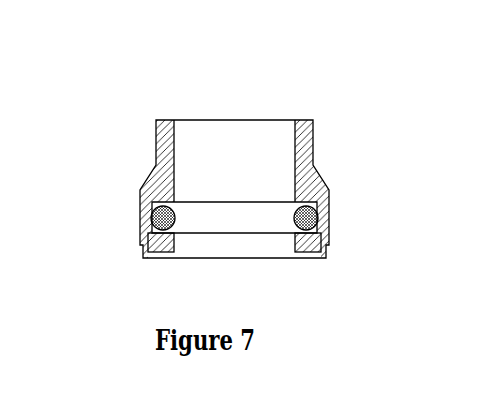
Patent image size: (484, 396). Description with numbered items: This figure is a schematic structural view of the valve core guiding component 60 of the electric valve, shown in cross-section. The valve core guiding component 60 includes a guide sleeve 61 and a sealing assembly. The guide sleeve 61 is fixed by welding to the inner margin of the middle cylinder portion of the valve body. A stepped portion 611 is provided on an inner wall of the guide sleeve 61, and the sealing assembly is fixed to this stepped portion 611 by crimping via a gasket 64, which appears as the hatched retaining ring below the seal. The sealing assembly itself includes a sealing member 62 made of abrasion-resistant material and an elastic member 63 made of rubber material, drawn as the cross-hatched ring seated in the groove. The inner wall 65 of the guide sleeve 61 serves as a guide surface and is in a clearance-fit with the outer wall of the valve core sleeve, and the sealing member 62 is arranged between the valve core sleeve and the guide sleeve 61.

The valve core guiding component 60 is at (200, 92).
The guide sleeve 61 is at (158, 132).
The stepped portion 611 is at (168, 203).
The inner wall 65 is at (173, 178).
The sealing member 62 is at (302, 203).
The elastic member 63 is at (320, 217).
The gasket 64 is at (147, 245).